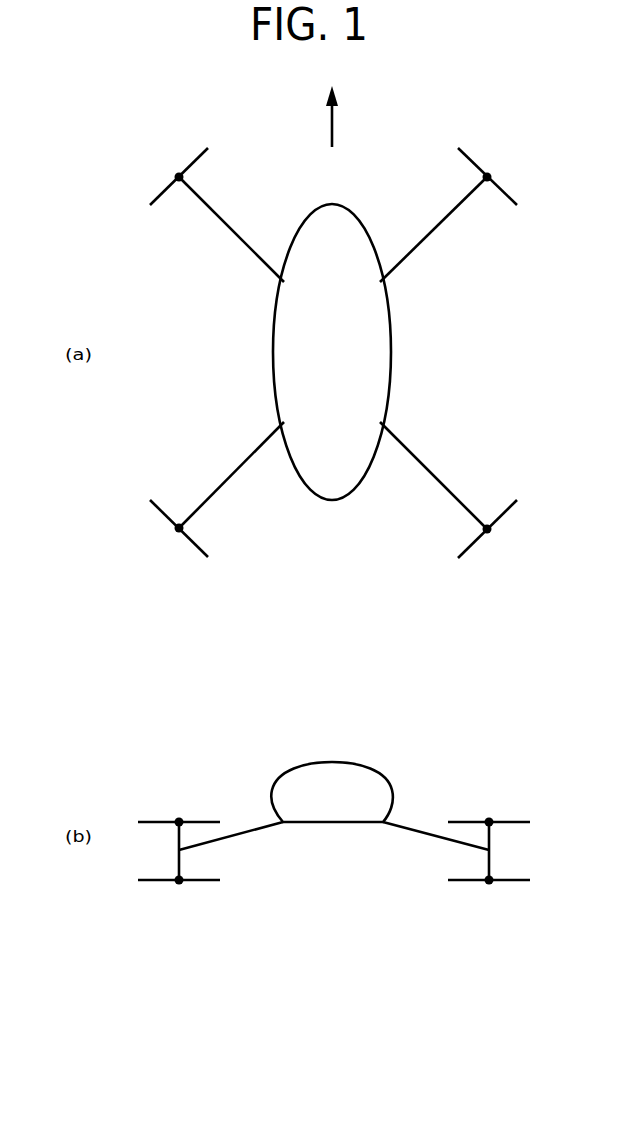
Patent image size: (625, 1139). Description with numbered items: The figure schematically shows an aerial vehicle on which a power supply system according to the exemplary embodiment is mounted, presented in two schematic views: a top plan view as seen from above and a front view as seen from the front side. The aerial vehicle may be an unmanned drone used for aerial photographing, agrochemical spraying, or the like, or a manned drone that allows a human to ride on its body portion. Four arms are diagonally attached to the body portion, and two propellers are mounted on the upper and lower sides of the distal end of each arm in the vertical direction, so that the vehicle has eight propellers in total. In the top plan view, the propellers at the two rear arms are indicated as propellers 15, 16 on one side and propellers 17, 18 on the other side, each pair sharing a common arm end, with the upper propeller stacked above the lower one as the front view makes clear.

The propeller 15 is at (163, 518).
The propeller 16 is at (179, 528).
The propeller 17 is at (505, 518).
The propeller 18 is at (487, 529).